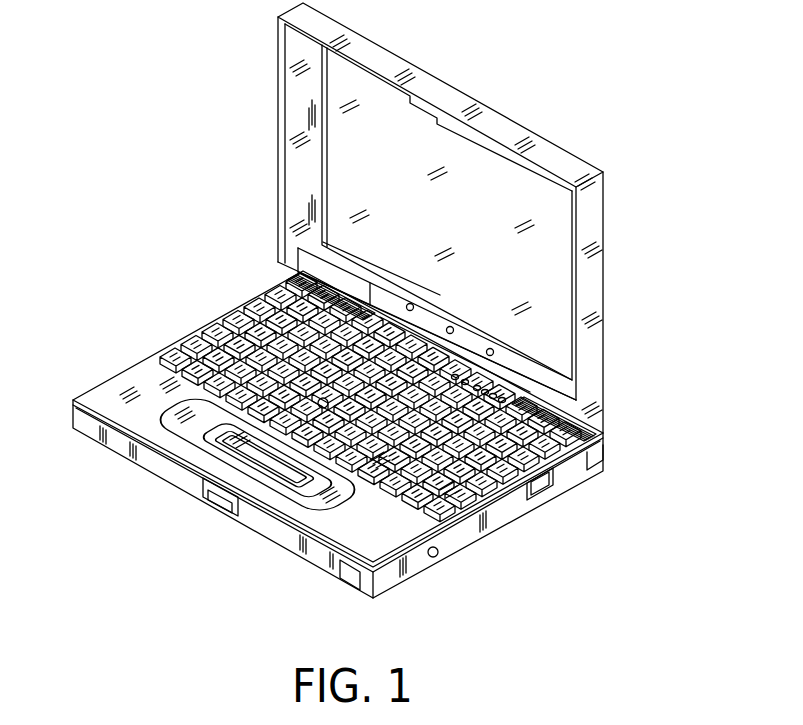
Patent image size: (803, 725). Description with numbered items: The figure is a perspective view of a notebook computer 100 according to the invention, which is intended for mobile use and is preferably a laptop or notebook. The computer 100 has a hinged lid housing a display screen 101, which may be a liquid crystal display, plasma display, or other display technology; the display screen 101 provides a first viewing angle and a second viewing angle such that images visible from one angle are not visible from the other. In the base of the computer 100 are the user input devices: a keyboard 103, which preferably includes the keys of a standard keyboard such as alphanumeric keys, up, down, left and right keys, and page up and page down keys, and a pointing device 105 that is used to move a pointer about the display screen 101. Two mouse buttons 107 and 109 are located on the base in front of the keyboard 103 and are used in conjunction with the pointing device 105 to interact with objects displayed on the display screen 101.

The computer 100 is at (645, 140).
The display screen 101 is at (412, 218).
The keyboard 103 is at (243, 313).
The pointing device 105 is at (323, 403).
The mouse button 107 is at (330, 440).
The mouse button 109 is at (320, 452).